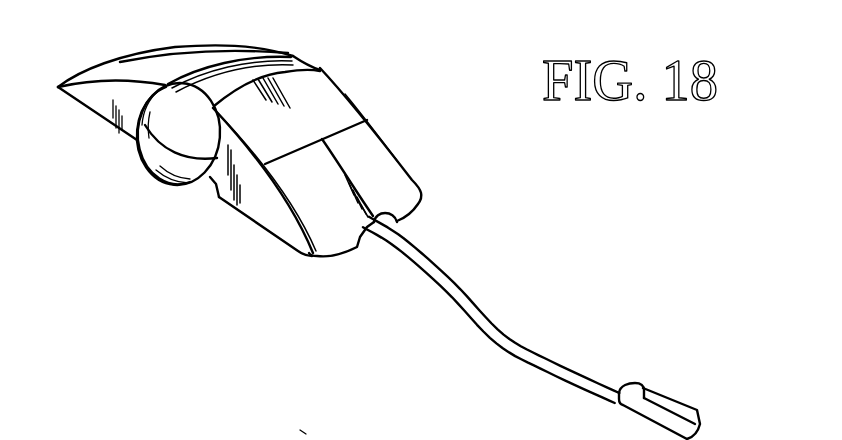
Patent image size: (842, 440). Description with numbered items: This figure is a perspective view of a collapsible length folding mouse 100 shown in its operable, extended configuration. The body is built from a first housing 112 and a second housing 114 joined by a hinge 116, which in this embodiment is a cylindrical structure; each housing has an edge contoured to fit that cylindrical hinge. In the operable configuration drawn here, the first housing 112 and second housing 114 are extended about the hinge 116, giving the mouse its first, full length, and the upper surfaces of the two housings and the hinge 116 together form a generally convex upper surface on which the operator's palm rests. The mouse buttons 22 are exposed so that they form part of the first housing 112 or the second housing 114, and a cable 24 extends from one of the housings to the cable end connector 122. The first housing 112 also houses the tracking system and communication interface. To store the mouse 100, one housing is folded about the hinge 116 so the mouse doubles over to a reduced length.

The camera assembly 100 is at (391, 58).
The first housing 112 is at (105, 108).
The second housing 114 is at (347, 106).
The hinge 116 is at (293, 56).
The mouse buttons 22 is at (398, 162).
The cable 24 is at (510, 337).
The base 122 is at (305, 434).